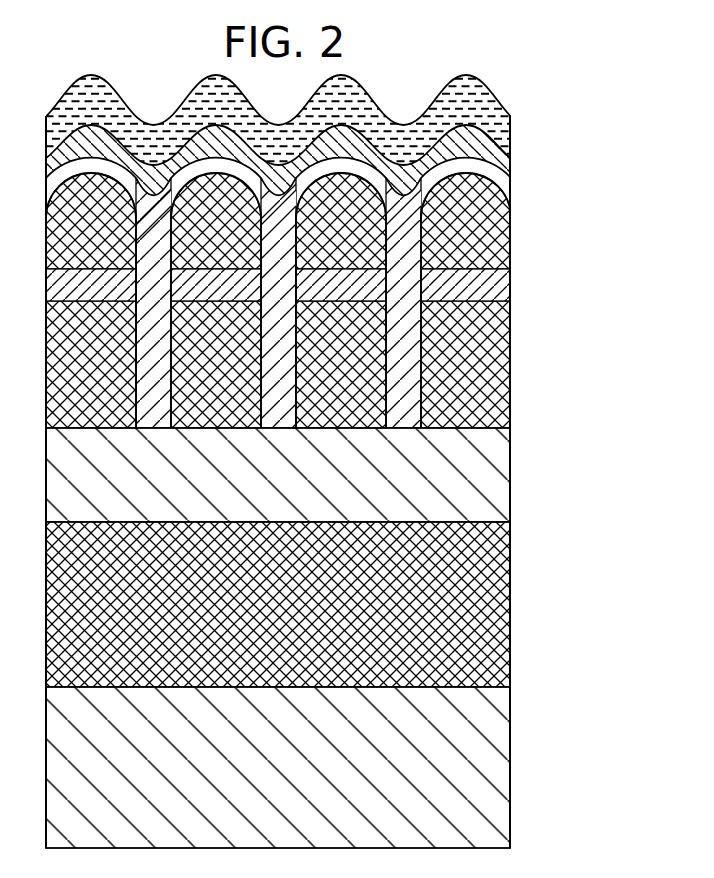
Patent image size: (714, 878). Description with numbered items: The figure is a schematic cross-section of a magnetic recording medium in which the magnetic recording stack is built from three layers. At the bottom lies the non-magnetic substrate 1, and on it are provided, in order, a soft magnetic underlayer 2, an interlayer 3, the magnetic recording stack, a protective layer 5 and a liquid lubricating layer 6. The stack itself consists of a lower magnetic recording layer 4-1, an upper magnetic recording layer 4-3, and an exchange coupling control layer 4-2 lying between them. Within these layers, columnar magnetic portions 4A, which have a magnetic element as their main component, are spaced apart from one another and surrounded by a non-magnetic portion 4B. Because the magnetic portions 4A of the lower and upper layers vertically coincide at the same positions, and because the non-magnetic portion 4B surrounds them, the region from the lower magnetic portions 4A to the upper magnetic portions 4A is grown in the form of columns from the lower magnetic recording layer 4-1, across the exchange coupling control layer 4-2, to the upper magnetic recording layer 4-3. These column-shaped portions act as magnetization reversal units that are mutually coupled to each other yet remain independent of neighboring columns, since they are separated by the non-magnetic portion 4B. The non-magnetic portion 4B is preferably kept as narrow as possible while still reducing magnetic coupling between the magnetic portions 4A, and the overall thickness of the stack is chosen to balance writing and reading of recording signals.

The non-magnetic substrate 1 is at (493, 775).
The soft magnetic underlayer 2 is at (495, 613).
The interlayer 3 is at (495, 476).
The magnetic portions 4A is at (490, 366).
The non-magnetic portion 4B is at (413, 418).
The lower magnetic recording layer 4-1 is at (495, 330).
The exchange coupling control layer 4-2 is at (495, 280).
The upper magnetic recording layer 4-3 is at (495, 202).
The protective layer 5 is at (495, 162).
The liquid lubricating layer 6 is at (503, 121).